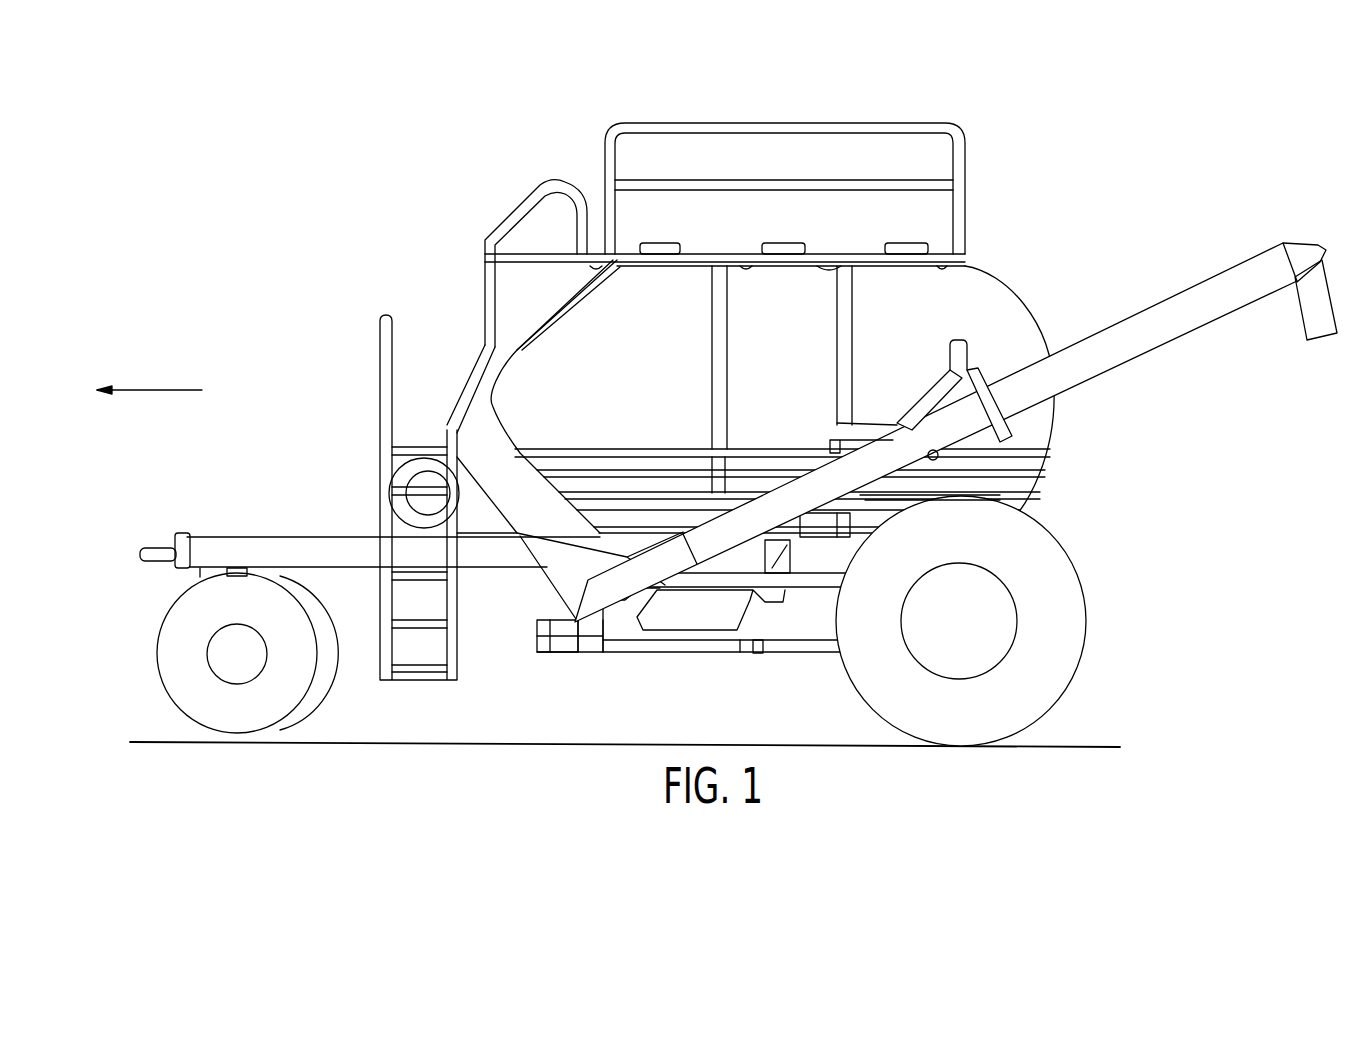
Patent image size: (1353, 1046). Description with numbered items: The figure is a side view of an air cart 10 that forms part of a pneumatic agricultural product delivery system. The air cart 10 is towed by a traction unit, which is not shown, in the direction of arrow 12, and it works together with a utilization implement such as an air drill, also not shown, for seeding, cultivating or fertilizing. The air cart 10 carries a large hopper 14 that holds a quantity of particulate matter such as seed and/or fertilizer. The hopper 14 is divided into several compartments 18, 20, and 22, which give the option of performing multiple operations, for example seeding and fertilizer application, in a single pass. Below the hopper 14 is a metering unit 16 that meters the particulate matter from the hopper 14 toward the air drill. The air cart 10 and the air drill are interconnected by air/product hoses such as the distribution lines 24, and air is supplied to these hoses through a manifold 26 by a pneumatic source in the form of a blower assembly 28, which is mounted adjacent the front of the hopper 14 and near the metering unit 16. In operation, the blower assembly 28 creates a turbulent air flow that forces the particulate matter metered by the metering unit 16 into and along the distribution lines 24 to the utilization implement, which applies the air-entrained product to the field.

The air cart 10 is at (717, 435).
The arrow 12 is at (155, 390).
The hopper 14 is at (777, 388).
The metering unit 16 is at (662, 600).
The compartment 18 is at (924, 344).
The compartment 20 is at (643, 341).
The compartment 22 is at (793, 341).
The distribution lines 24 is at (556, 655).
The manifold 26 is at (612, 655).
The blower assembly 28 is at (503, 430).